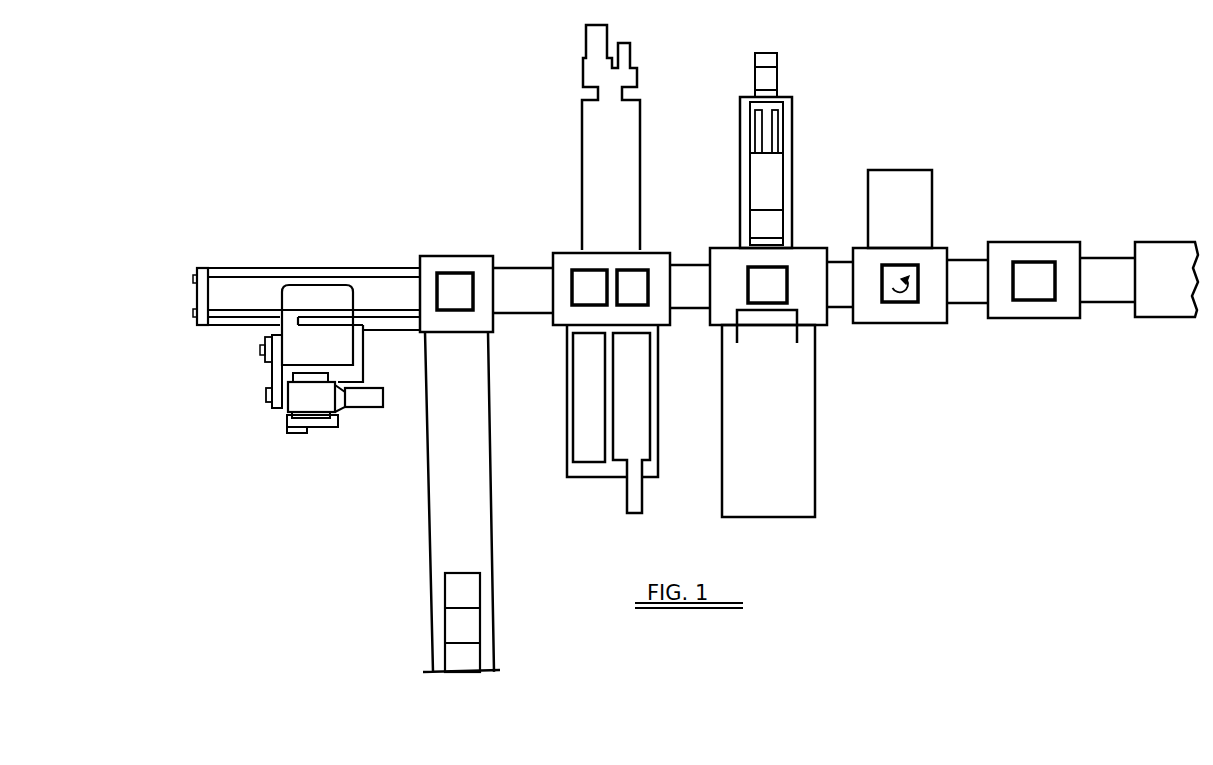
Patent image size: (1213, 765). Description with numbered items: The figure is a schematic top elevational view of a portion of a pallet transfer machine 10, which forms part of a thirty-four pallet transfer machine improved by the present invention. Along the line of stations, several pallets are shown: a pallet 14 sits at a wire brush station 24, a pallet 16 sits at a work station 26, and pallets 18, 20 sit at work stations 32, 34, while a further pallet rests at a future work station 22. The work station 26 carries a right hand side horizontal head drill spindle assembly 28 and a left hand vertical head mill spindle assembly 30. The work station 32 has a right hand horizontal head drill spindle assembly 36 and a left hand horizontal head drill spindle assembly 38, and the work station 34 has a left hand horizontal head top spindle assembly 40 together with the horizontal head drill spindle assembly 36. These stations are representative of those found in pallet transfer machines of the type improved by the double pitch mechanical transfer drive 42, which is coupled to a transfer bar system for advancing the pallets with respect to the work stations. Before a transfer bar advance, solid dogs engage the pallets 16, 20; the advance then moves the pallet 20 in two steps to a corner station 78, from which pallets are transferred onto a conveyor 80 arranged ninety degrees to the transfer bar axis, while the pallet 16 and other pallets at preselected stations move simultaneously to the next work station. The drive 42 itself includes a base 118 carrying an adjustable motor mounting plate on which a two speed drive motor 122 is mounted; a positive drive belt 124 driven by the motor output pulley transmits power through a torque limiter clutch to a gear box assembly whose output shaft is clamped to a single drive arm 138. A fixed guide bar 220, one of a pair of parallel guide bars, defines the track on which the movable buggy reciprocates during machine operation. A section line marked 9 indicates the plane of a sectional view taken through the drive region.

The pallet transfer machine 10 is at (714, 133).
The pallet 14 is at (902, 292).
The pallet 16 is at (768, 280).
The pallet 18 is at (645, 265).
The pallet 20 is at (587, 293).
The future work station 22 is at (1052, 248).
The wire brush station 24 is at (918, 218).
The work station 26 is at (832, 455).
The horizontal head drill spindle assembly 28 is at (775, 190).
The vertical head mill spindle assembly 30 is at (752, 333).
The work station 32 is at (668, 439).
The work station 34 is at (545, 240).
The horizontal head drill spindle assembly 36 is at (630, 210).
The horizontal head drill spindle assembly 38 is at (635, 352).
The horizontal head top spindle assembly 40 is at (590, 365).
The double pitch mechanical transfer drive 42 is at (323, 254).
The corner station 78 is at (445, 277).
The conveyor 80 is at (477, 510).
The base 118 is at (323, 433).
The two speed drive motor 122 is at (367, 403).
The positive drive belt 124 is at (273, 378).
The drive arm 138 is at (340, 332).
The guide bar 220 is at (223, 313).
The section line 9- 9 is at (206, 375).